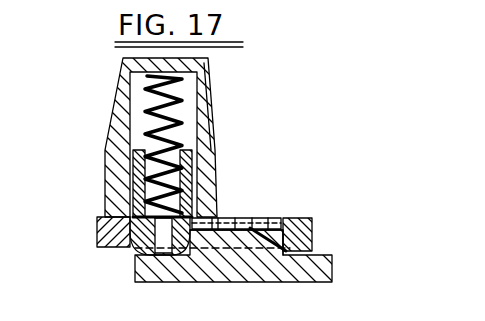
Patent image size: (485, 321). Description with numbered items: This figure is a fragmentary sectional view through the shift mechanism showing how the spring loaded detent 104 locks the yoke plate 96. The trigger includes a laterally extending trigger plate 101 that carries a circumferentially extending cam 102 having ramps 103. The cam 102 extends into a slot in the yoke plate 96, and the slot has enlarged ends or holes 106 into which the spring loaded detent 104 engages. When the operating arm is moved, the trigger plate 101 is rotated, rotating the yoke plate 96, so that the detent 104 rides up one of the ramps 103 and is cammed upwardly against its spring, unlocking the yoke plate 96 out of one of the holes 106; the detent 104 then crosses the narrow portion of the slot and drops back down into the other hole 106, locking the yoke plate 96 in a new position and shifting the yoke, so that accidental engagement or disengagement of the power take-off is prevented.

The yoke plate 96 is at (312, 231).
The trigger plate 101 is at (332, 271).
The cam 102 is at (245, 240).
The ramps 103 is at (203, 214).
The spring loaded detent 104 is at (133, 183).
The holes 106 is at (133, 250).